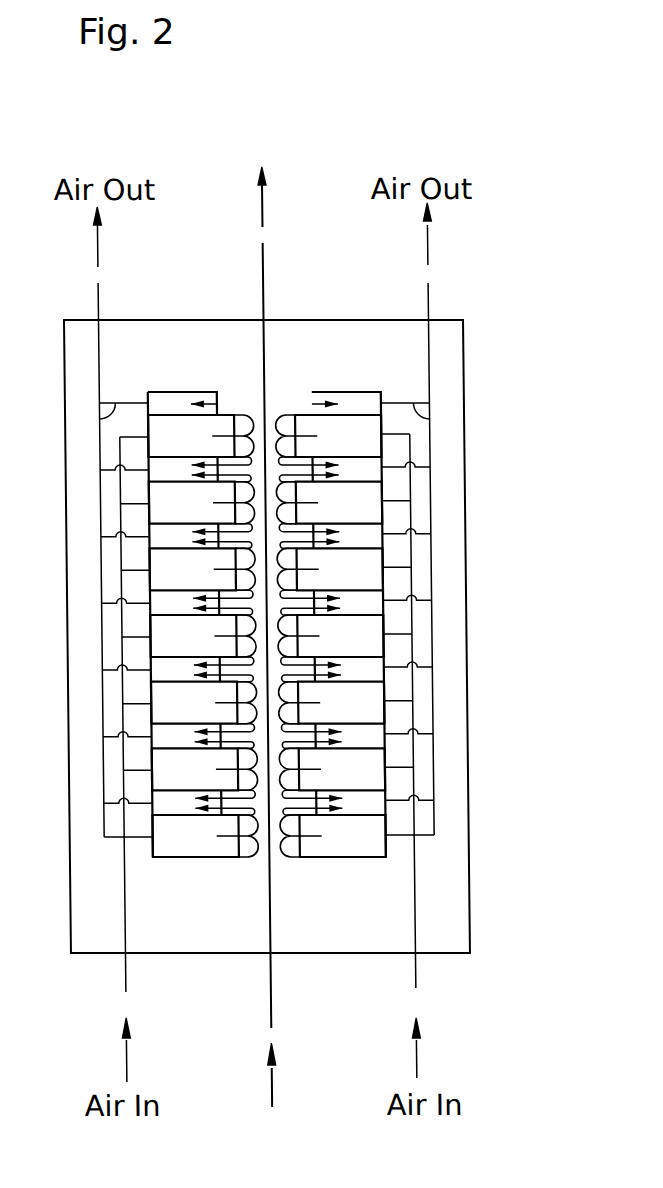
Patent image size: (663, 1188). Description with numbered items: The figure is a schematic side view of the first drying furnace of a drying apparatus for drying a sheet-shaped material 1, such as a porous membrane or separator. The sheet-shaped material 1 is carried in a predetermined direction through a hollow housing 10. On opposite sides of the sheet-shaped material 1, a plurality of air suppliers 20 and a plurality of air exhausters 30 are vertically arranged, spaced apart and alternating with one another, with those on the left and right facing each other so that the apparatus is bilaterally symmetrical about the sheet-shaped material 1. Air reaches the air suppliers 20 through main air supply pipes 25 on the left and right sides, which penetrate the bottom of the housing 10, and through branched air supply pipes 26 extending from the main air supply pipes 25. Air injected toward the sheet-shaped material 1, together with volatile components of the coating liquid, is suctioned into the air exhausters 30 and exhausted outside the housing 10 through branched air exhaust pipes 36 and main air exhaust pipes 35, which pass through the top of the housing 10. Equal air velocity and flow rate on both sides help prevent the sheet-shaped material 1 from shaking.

The sheet-shaped material 1 is at (264, 255).
The hollow housing 10 is at (464, 632).
The air supplier 20 is at (336, 967).
The main air supply pipe 25 is at (410, 815).
The branched air supply pipe 26 is at (395, 766).
The air exhauster 30 is at (348, 391).
The main air exhaust pipe 35 is at (430, 362).
The branched air exhaust pipe 36 is at (428, 419).